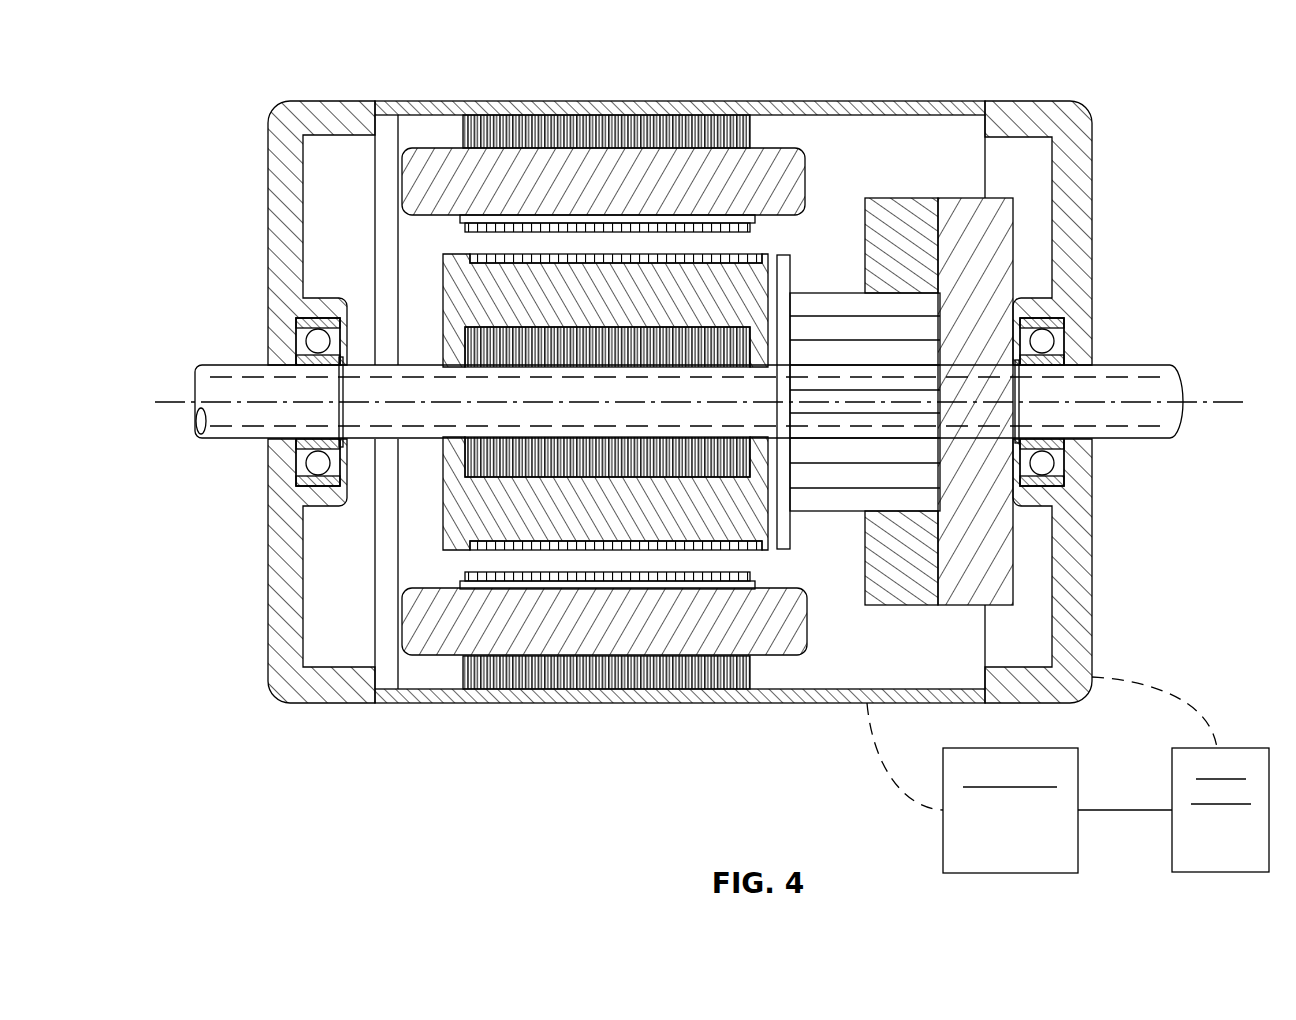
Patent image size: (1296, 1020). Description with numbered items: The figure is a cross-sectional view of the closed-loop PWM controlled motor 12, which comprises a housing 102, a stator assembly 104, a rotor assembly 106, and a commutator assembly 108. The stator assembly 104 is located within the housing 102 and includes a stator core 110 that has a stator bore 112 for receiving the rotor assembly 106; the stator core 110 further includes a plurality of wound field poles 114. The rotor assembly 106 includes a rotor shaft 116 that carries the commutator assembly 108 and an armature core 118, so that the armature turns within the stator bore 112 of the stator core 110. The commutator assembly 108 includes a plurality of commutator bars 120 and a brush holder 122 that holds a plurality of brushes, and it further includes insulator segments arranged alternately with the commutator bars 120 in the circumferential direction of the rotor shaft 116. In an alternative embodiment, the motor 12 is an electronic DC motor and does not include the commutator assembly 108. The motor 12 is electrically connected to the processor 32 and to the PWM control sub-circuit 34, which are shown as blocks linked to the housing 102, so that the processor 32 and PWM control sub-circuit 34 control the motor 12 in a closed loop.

The closed-loop PWM controlled motor 12 is at (288, 760).
The processor 32 is at (998, 837).
The PWM control sub-circuit 34 is at (1209, 837).
The housing 102 is at (1013, 101).
The stator assembly 104 is at (830, 182).
The rotor assembly 106 is at (433, 290).
The commutator assembly 108 is at (857, 624).
The stator core 110 is at (808, 627).
The stator bore 112 is at (806, 567).
The wound field poles 114 is at (639, 631).
The rotor shaft 116 is at (1163, 443).
The armature core 118 is at (442, 528).
The commutator bars 120 is at (832, 294).
The brush holder 122 is at (913, 606).